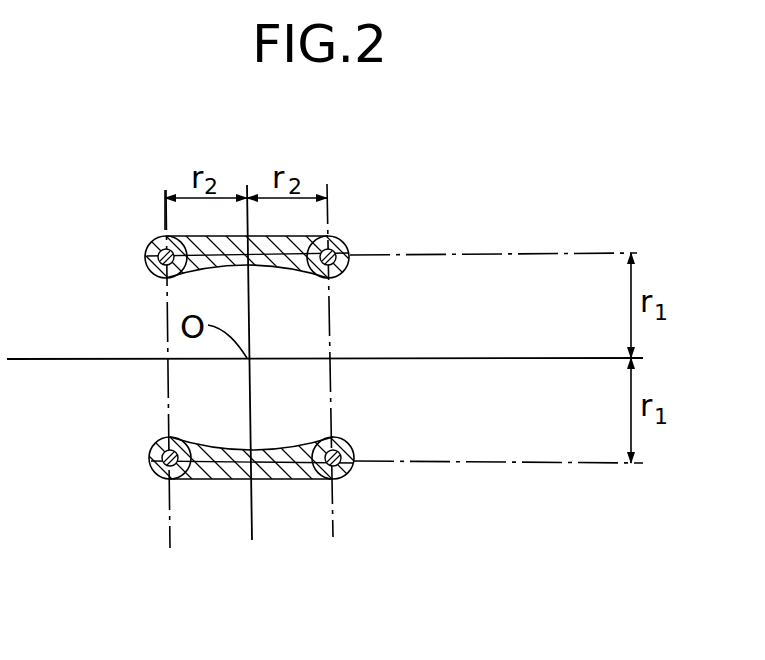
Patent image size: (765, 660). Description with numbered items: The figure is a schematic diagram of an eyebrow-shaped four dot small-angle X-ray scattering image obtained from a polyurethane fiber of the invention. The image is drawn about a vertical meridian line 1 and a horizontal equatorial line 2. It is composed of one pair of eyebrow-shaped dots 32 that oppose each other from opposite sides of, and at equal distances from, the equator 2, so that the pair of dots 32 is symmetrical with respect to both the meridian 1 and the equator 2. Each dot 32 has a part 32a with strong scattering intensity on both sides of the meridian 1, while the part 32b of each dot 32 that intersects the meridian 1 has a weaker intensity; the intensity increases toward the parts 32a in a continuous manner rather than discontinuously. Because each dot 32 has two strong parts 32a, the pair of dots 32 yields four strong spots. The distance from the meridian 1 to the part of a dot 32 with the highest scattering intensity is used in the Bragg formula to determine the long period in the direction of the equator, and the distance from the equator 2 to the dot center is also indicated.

The meridian line 1 is at (258, 534).
The equatorial line 2 is at (481, 364).
The eyebrow-shaped four dot scattering image 32 is at (254, 369).
The part with strong scattering intensity 32a is at (157, 249).
The part intersecting the meridian 32b is at (280, 262).